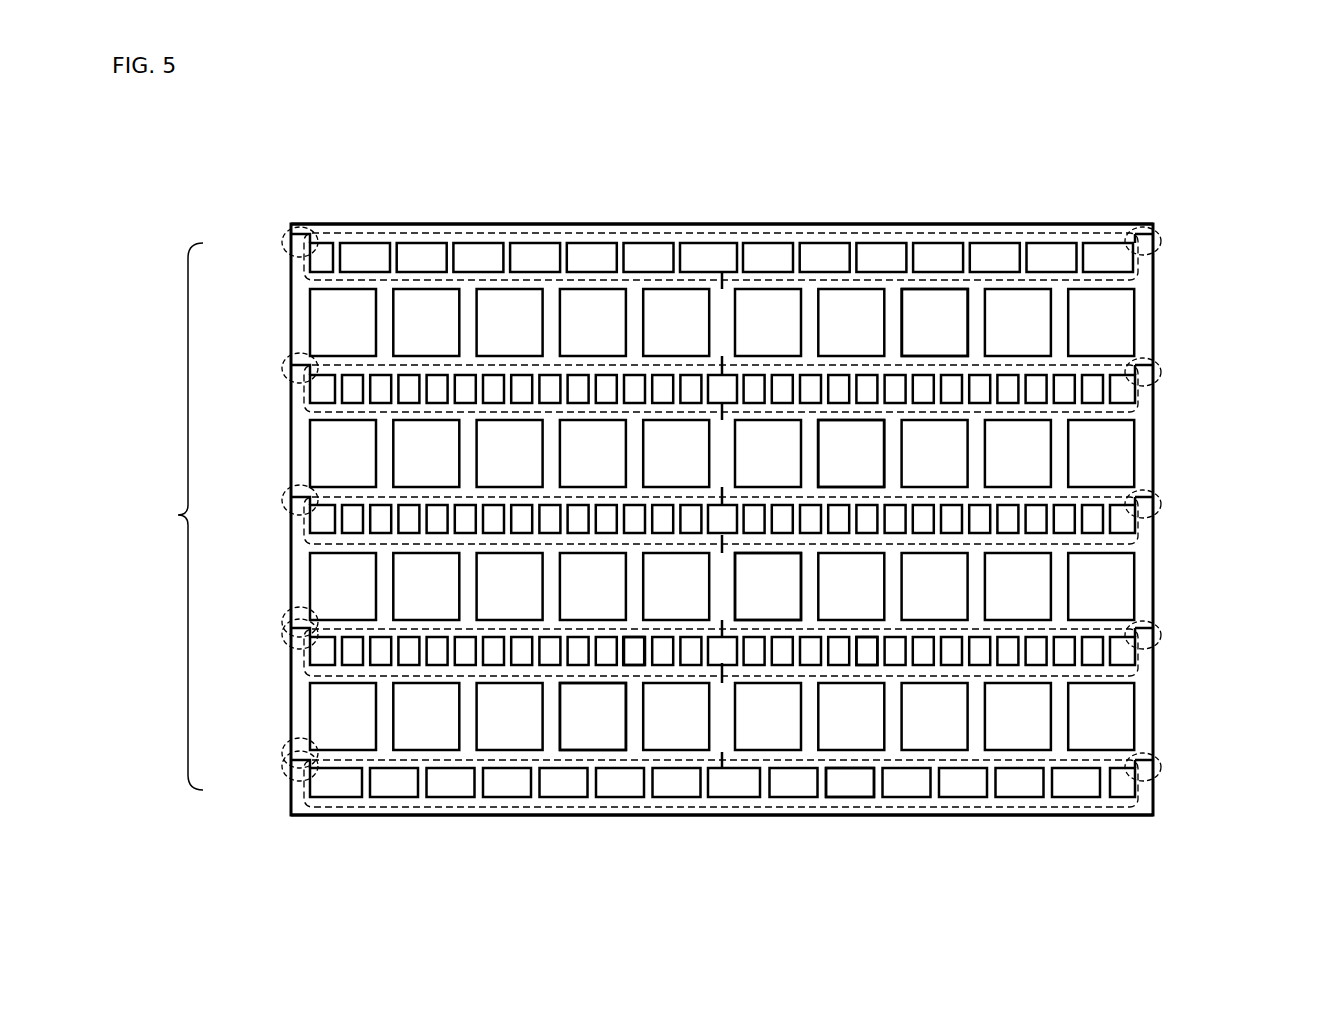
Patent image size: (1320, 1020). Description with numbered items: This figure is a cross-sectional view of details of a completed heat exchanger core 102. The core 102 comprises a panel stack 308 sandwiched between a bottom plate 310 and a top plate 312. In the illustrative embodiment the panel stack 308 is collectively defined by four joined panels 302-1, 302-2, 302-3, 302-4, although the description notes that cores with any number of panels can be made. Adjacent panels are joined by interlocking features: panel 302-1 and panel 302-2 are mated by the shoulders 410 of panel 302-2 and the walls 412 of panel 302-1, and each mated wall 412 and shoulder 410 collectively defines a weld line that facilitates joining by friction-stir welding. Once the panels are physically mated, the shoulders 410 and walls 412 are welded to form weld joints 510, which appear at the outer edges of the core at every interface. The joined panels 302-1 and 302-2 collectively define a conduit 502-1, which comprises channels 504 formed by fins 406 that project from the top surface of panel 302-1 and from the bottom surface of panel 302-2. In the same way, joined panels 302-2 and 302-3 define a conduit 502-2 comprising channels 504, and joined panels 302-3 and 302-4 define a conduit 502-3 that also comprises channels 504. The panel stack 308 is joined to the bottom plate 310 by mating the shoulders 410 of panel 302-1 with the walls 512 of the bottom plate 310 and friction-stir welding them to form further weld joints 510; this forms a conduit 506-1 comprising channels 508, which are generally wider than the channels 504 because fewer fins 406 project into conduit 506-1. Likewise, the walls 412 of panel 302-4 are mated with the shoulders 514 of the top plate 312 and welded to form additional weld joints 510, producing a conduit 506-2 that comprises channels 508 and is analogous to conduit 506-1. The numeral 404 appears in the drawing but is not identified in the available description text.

The heat exchanger core 102 is at (352, 146).
The panel stack 308 is at (164, 516).
The bottom plate 310 is at (1005, 815).
The top plate 312 is at (1003, 224).
The panel 302-1 is at (1212, 725).
The panel 302-2 is at (1212, 604).
The panel 302-3 is at (1212, 454).
The panel 302-4 is at (1212, 322).
The large pad 404 is at (951, 334).
The fins 406 is at (880, 657).
The shoulders 410 is at (300, 622).
The walls 412 is at (290, 244).
The conduit 502-1 is at (1138, 674).
The conduit 502-2 is at (1138, 542).
The conduit 502-3 is at (1138, 410).
The channels 504 is at (633, 655).
The conduit 506-1 is at (668, 805).
The conduit 506-2 is at (640, 233).
The channels 508 is at (710, 257).
The weld joints 510 is at (283, 245).
The walls 512 is at (291, 768).
The shoulders 514 is at (291, 226).